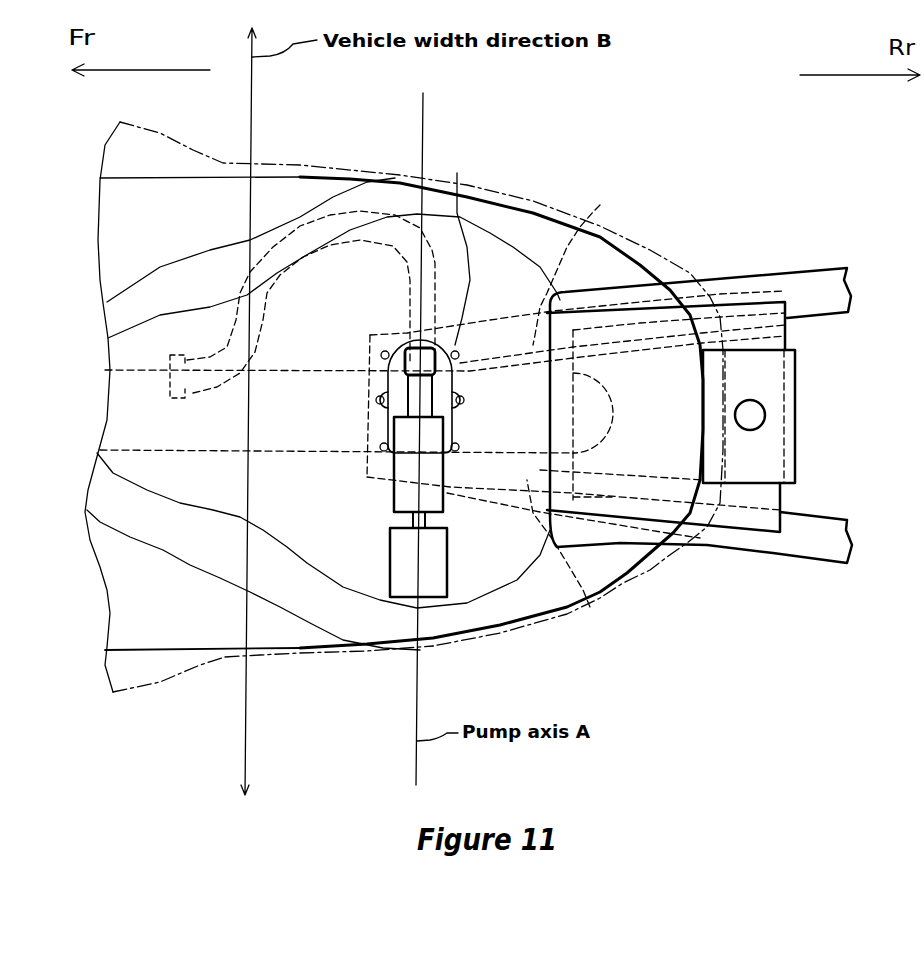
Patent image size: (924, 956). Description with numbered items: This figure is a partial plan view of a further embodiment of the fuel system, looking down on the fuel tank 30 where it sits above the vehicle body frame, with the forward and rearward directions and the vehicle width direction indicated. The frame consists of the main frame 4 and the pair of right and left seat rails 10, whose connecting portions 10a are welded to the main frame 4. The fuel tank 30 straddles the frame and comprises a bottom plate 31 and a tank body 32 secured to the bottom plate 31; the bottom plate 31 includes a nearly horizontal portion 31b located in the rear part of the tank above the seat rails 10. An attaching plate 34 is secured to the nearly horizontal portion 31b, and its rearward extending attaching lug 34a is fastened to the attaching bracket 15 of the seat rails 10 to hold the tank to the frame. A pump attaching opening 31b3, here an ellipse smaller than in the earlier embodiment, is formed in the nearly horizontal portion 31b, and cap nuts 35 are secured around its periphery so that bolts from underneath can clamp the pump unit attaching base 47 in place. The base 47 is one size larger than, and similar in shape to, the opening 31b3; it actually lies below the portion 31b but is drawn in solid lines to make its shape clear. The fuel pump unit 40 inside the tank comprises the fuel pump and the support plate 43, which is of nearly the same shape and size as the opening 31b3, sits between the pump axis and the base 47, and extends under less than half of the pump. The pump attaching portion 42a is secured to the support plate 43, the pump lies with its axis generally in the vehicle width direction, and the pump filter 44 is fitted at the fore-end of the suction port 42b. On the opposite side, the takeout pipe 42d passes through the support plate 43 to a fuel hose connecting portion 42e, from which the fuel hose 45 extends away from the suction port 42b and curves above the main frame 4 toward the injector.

The main frame 4 is at (140, 398).
The seat rails 10 is at (817, 288).
The connecting portions 10a is at (576, 413).
The attaching bracket 15 is at (752, 330).
The fuel tank 30 is at (527, 191).
The bottom plate 31 is at (161, 666).
The nearly horizontal portion 31b is at (362, 267).
The pump attaching opening 31b3 is at (458, 380).
The tank body 32 is at (294, 669).
The attaching plate 34 is at (808, 432).
The attaching lug 34a is at (753, 470).
The cap nuts 35 is at (461, 245).
The fuel pump unit 40 is at (413, 490).
The pump attaching portion 42a is at (390, 482).
The suction port 42b is at (413, 517).
The takeout pipe 42d is at (436, 347).
The fuel hose connecting portion 42e is at (413, 398).
The support plate 43 is at (464, 403).
The pump filter 44 is at (407, 587).
The fuel hose 45 is at (299, 217).
The pump unit attaching base 47 is at (386, 378).